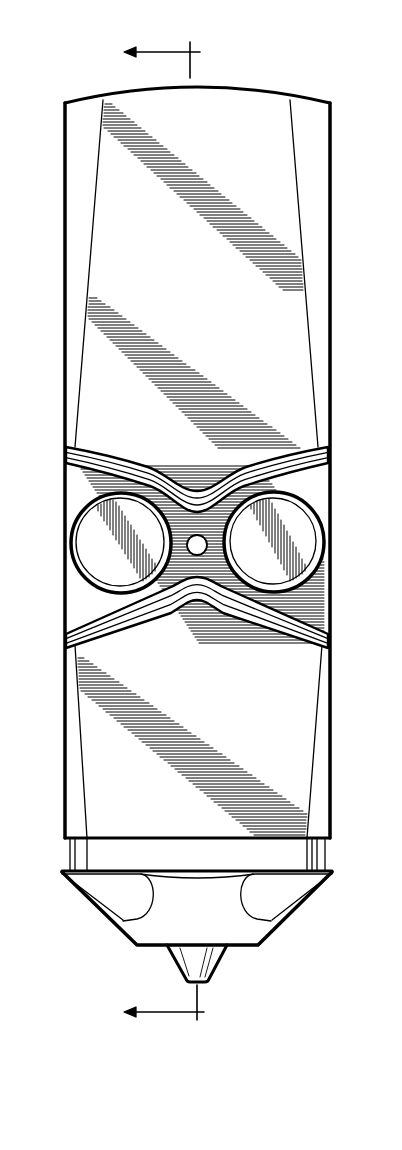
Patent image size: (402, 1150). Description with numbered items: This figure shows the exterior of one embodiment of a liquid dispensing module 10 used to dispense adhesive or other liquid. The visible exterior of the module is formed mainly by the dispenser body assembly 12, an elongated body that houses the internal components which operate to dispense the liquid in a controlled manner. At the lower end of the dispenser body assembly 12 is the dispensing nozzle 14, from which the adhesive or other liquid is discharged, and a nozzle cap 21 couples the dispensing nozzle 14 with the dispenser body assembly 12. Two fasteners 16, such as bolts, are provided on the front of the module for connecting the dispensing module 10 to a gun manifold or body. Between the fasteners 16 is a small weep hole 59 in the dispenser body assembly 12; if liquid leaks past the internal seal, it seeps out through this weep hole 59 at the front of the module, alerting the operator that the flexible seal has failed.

The liquid dispensing module 10 is at (70, 62).
The dispenser body assembly 12 is at (107, 289).
The dispensing nozzle 14 is at (187, 962).
The fasteners 16 is at (108, 553).
The nozzle cap 21 is at (130, 931).
The weep hole 59 is at (196, 535).